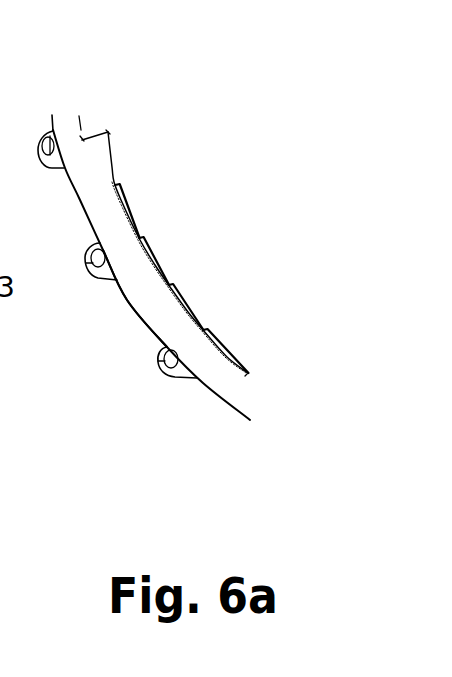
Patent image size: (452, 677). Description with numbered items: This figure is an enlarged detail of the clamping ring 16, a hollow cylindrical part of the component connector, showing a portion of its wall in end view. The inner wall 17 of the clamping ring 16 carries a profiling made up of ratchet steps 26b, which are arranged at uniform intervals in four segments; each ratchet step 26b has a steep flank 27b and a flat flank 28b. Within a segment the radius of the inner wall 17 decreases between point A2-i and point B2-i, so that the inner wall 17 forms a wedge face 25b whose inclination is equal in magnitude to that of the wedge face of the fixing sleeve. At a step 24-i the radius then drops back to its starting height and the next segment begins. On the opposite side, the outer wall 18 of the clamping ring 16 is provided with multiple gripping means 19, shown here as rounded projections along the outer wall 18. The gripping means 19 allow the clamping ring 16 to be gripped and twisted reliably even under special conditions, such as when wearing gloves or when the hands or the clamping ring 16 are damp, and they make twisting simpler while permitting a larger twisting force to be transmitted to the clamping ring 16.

The clamping ring 16 is at (233, 104).
The step 24-i is at (97, 135).
The point A2-i is at (81, 138).
The point B2-i is at (108, 132).
The inner wall 17 is at (116, 169).
The wedge face 25b is at (120, 205).
The flat flank 28b is at (148, 250).
The steep flank 27b is at (170, 284).
The ratchet steps 26b is at (190, 310).
The outer wall 18 is at (123, 297).
The gripping means 19 is at (165, 371).